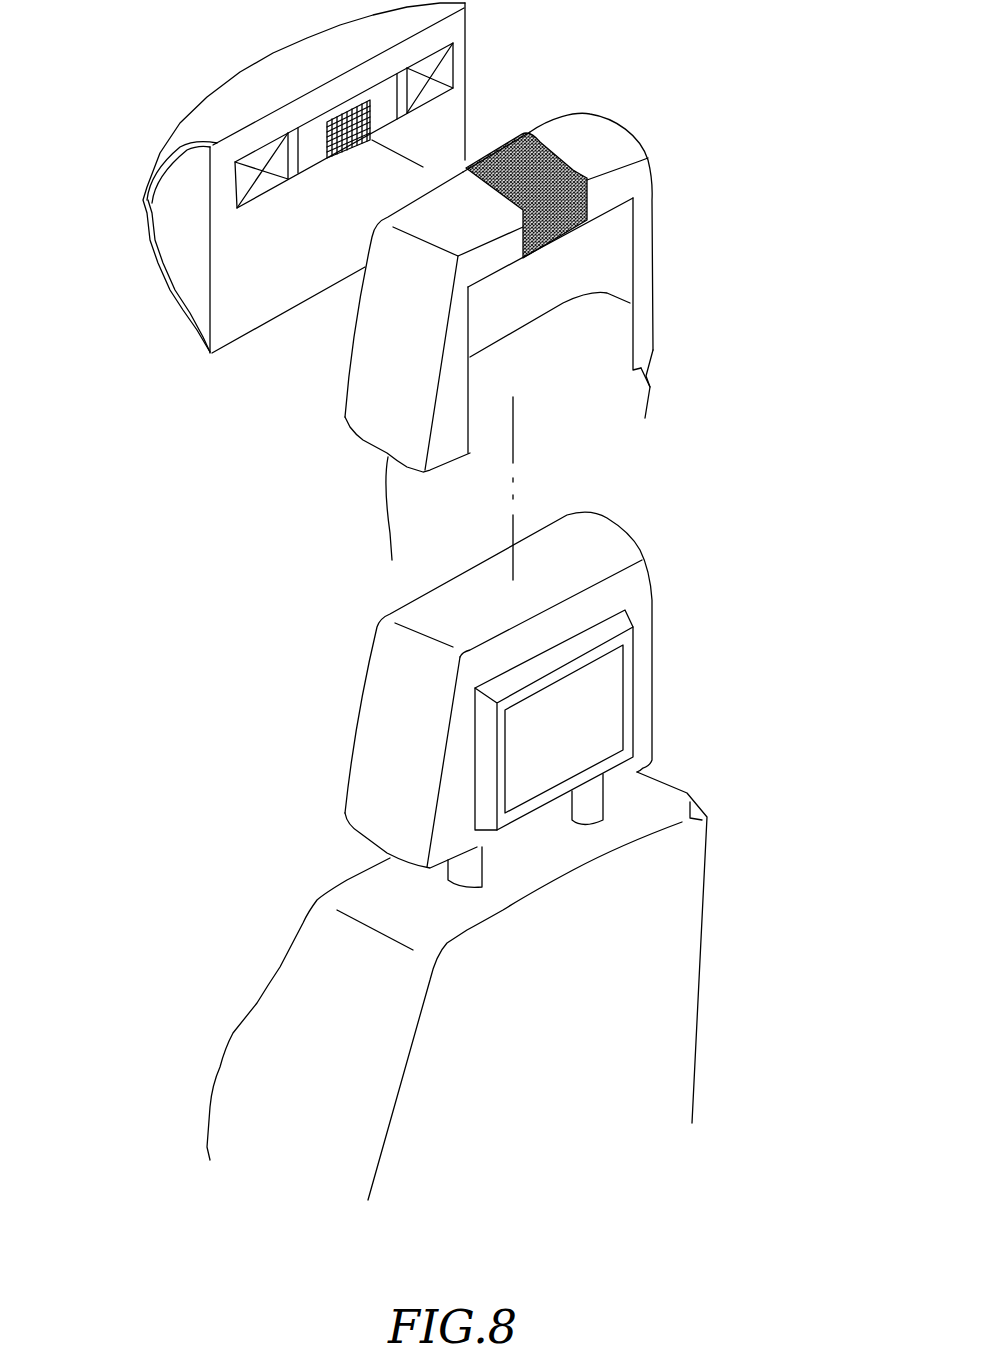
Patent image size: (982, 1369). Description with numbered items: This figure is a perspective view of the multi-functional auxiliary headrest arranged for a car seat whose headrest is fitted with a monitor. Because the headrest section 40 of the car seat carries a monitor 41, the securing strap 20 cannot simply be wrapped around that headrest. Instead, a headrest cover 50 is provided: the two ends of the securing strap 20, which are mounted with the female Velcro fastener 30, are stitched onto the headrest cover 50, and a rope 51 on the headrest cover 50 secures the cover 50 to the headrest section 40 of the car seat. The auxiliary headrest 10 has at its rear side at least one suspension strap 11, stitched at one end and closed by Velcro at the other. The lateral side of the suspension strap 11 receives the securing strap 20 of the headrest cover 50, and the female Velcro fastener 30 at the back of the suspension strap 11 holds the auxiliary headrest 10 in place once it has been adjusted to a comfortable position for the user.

The auxiliary headrest 10 is at (215, 115).
The suspension strap 11 is at (263, 173).
The securing strap 20 is at (498, 133).
The female Velcro fastener 30 is at (588, 182).
The headrest section 40 is at (398, 660).
The monitor 41 is at (633, 635).
The headrest cover 50 is at (620, 145).
The rope 51 is at (653, 387).